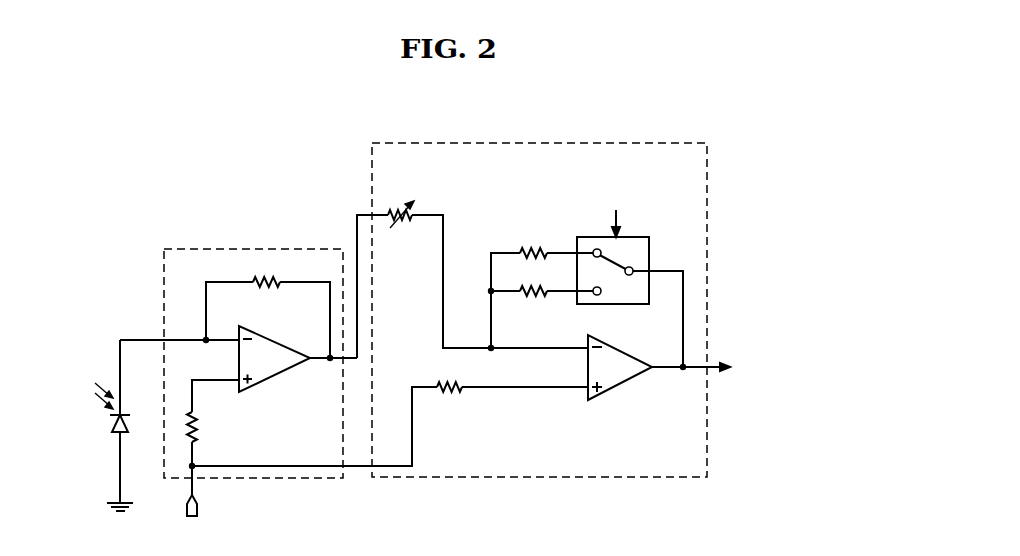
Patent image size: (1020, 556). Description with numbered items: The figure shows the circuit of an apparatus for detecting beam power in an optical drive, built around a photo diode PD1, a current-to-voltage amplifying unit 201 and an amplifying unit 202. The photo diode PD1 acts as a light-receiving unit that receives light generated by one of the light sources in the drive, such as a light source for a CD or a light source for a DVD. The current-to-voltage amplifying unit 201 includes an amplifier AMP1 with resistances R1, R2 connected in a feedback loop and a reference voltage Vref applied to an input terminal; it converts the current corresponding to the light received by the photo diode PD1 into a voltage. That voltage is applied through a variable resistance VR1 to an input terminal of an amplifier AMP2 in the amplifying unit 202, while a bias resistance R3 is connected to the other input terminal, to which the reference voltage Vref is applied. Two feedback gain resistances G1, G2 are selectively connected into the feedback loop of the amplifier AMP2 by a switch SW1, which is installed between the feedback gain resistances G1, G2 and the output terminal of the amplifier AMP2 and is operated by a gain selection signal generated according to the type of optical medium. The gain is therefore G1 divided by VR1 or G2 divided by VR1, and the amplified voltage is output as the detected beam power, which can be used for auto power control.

The current-to-voltage amplifying unit 201 is at (248, 248).
The amplifying unit 202 is at (467, 142).
The photo diode PD1 is at (152, 425).
The resistance R1 is at (213, 437).
The resistance R2 is at (268, 305).
The bias resistance R3 is at (390, 424).
The amplifier AMP1 is at (298, 359).
The amplifier AMP2 is at (712, 368).
The variable resistance VR1 is at (472, 269).
The feedback gain resistance G1 is at (542, 285).
The feedback gain resistance G2 is at (542, 304).
The switch SW1 is at (611, 262).
The reference voltage Vref is at (192, 523).